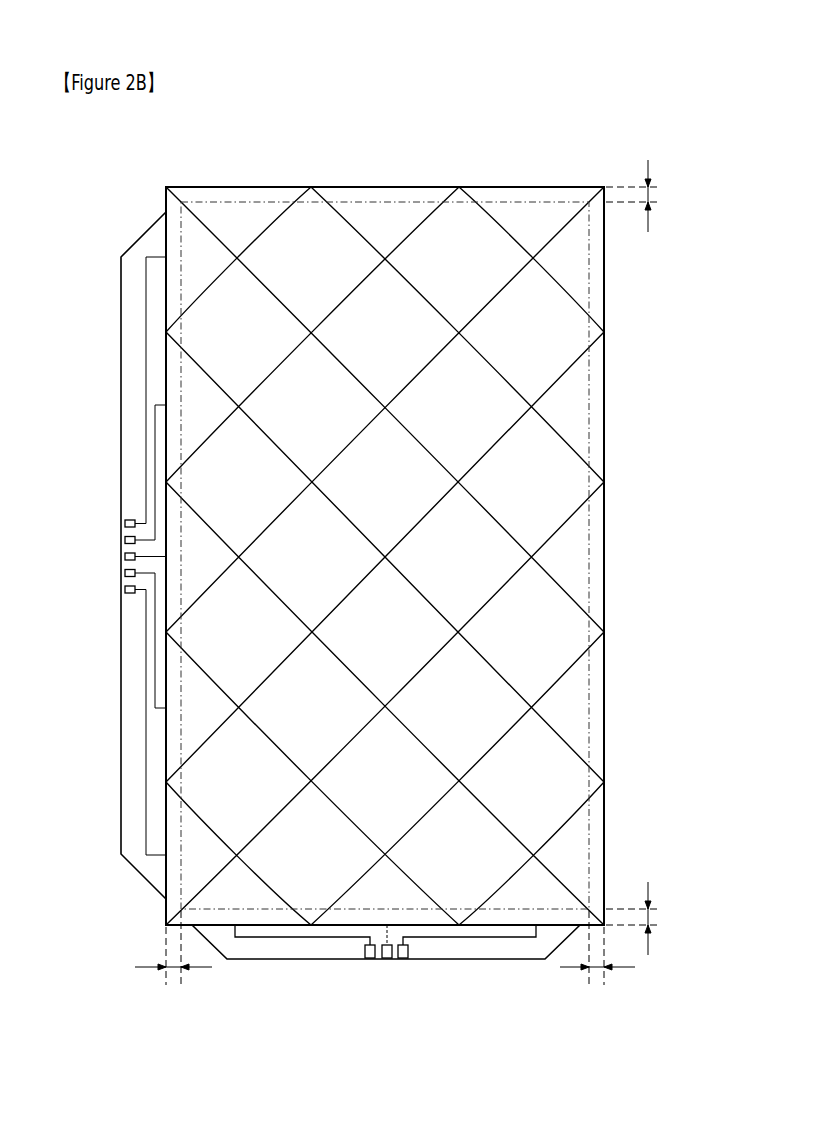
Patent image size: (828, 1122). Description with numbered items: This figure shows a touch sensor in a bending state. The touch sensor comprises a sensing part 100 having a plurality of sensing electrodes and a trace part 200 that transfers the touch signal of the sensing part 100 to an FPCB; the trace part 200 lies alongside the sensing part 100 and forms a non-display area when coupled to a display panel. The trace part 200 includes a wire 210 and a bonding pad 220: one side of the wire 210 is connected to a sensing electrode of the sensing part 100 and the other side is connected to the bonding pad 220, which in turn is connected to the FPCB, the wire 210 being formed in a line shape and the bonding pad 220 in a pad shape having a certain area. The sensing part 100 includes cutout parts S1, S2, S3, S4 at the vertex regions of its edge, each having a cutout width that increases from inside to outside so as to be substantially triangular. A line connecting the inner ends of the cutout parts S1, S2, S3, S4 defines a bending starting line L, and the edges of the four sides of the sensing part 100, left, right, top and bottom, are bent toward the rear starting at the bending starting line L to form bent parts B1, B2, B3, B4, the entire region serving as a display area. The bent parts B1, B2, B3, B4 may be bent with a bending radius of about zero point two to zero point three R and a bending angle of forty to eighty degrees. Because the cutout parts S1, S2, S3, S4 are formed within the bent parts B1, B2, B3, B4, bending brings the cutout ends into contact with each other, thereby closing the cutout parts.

The sensing part 100 is at (386, 187).
The trace part 200 is at (142, 236).
The wire 210 is at (121, 370).
The bonding pad 220 is at (122, 523).
The bending starting line L is at (590, 258).
The cutout part S1 is at (166, 187).
The cutout part S2 is at (166, 925).
The cutout part S3 is at (604, 925).
The cutout part S4 is at (604, 187).
The bent part B1 is at (173, 958).
The bent part B2 is at (597, 958).
The bent part B3 is at (643, 196).
The bent part B4 is at (643, 918).